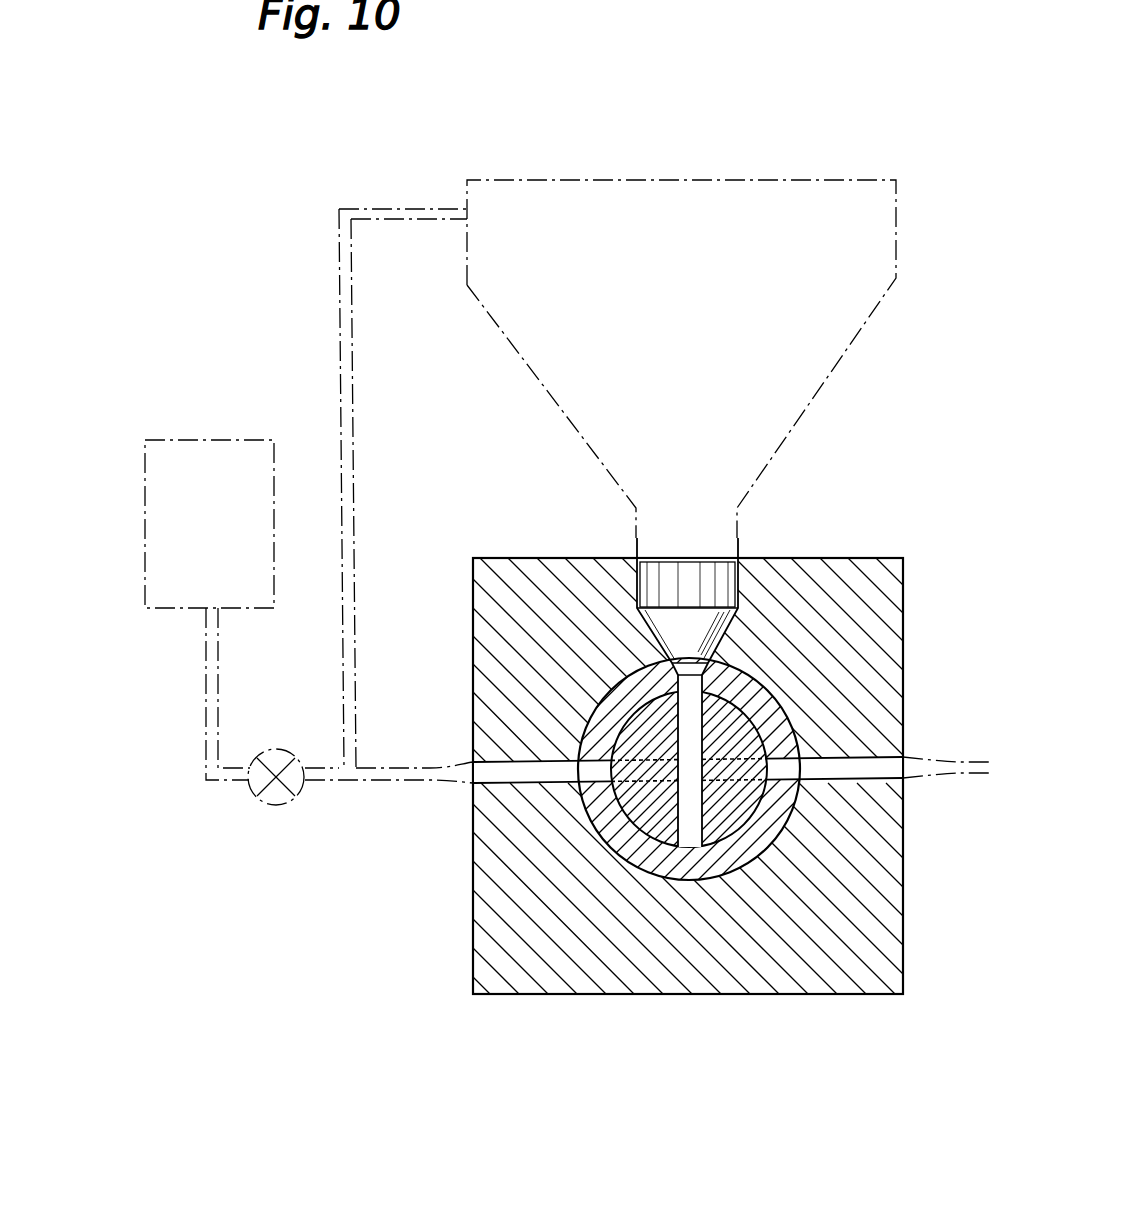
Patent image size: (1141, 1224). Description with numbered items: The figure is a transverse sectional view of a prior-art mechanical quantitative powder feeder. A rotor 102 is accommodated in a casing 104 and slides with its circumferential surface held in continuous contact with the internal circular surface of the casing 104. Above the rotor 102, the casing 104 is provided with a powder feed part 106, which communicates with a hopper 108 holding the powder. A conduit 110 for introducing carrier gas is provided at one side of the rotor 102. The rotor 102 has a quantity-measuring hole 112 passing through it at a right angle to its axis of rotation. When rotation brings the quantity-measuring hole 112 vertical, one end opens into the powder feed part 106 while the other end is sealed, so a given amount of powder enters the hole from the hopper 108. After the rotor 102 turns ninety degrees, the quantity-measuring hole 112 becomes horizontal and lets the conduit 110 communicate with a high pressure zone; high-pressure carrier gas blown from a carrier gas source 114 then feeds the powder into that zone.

The rotor 102 is at (780, 698).
The casing 104 is at (822, 557).
The powder feed part 106 is at (683, 570).
The hopper 108 is at (690, 177).
The conduit 110 is at (525, 761).
The quantity-measuring hole 112 is at (653, 783).
The carrier gas source 114 is at (208, 440).